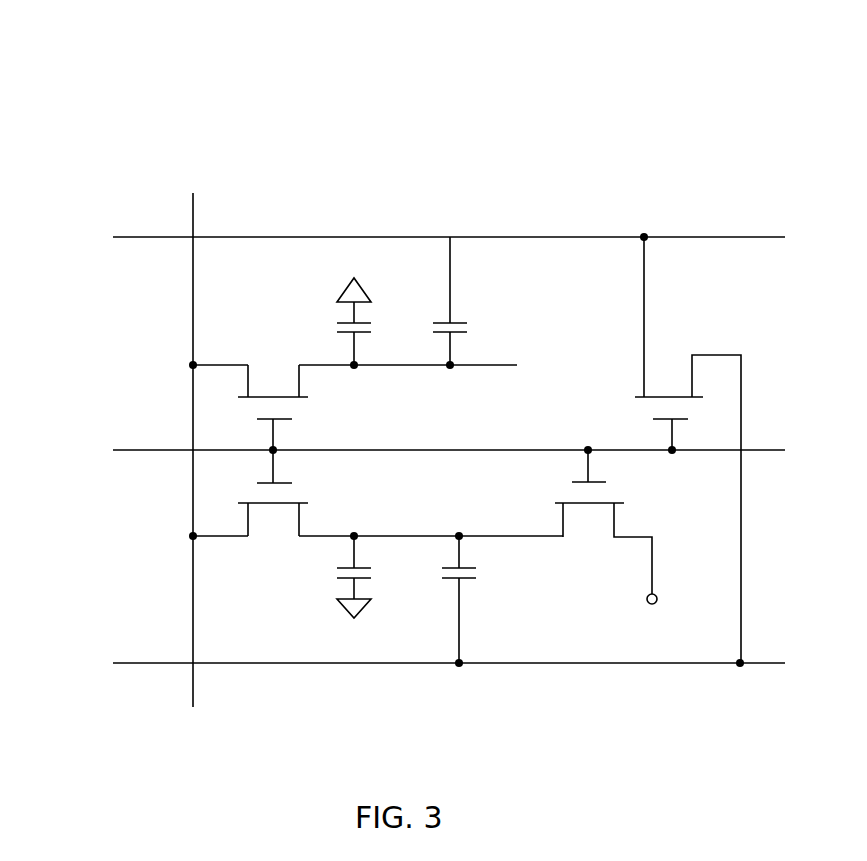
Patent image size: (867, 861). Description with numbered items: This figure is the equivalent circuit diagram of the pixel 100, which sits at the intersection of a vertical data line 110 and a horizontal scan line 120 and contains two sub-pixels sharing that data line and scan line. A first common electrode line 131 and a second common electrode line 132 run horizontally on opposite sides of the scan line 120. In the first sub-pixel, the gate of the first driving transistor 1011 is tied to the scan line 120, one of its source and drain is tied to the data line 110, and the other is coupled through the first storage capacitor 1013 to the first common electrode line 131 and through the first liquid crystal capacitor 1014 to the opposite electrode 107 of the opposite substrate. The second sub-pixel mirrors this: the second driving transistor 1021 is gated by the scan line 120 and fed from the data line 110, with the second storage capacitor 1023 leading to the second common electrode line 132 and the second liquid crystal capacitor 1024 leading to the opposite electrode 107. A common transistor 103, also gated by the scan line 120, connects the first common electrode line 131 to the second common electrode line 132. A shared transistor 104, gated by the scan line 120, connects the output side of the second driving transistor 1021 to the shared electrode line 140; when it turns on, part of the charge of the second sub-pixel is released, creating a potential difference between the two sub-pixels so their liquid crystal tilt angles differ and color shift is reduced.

The pixel 100 is at (143, 64).
The data line 110 is at (190, 433).
The first common electrode line 131 is at (426, 241).
The scan line 120 is at (426, 453).
The second common electrode line 132 is at (426, 668).
The first driving transistor 1011 is at (293, 399).
The second driving transistor 1021 is at (297, 503).
The first liquid crystal capacitor 1014 is at (340, 322).
The first storage capacitor 1013 is at (460, 322).
The second liquid crystal capacitor 1024 is at (342, 578).
The second storage capacitor 1023 is at (470, 580).
The opposite electrode 107 is at (355, 451).
The common transistor 103 is at (640, 397).
The shared transistor 104 is at (567, 503).
The shared electrode line 140 is at (653, 617).